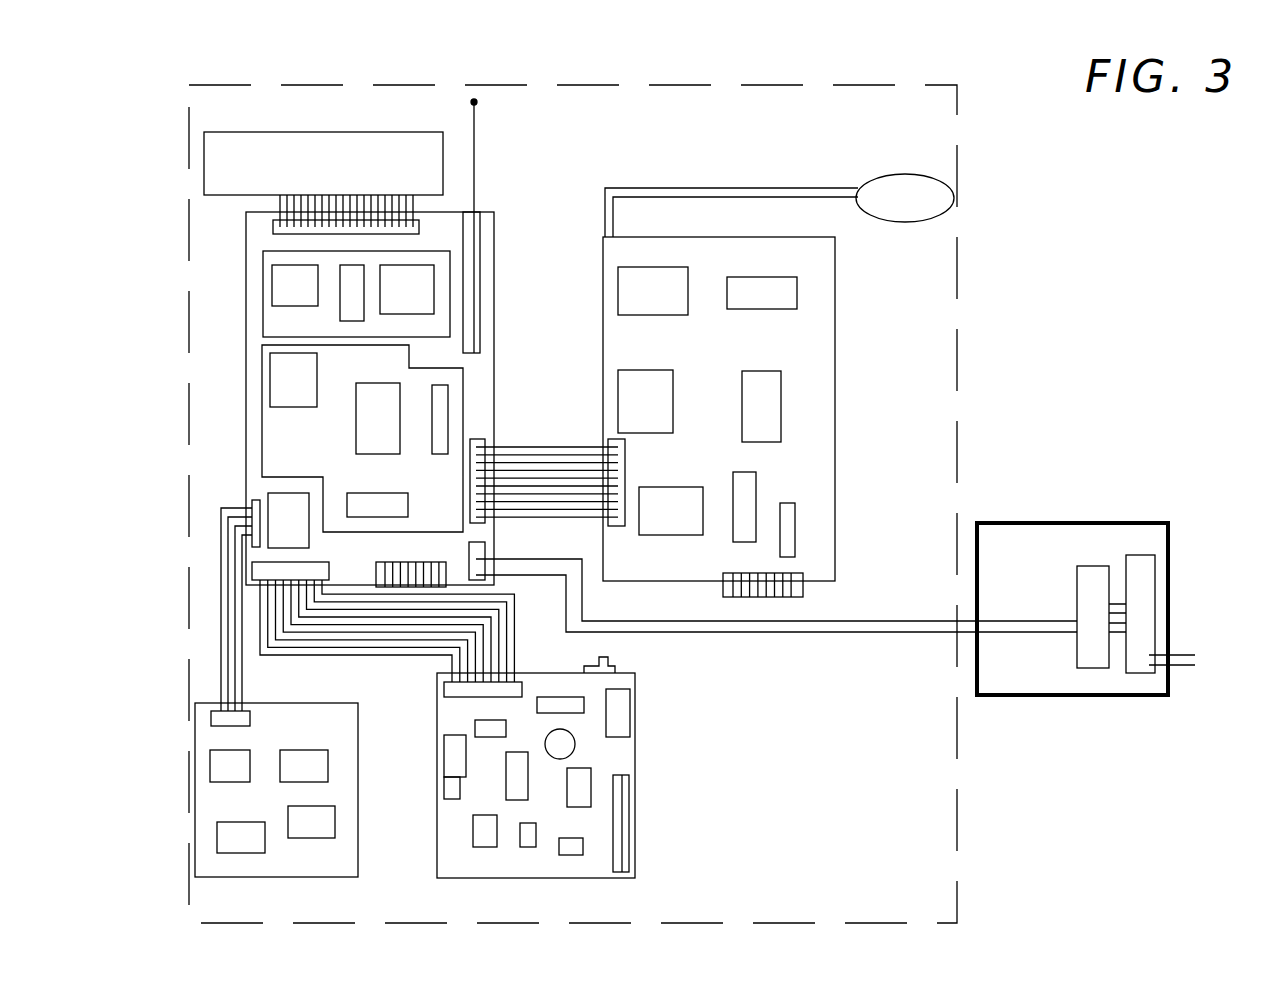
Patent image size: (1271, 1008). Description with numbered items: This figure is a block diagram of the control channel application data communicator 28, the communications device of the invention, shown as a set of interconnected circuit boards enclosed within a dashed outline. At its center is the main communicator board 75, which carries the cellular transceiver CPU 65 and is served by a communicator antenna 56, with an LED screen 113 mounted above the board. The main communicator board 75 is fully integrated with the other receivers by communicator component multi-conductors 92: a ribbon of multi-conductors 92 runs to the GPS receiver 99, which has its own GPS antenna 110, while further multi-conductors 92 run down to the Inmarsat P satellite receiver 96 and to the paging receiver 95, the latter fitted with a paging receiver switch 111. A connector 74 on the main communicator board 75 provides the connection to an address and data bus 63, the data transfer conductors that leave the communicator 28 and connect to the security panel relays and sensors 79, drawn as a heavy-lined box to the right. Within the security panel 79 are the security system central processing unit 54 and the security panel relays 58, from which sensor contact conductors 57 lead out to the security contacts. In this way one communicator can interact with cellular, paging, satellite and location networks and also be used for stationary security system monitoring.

The control channel application data communicator 28 is at (584, 72).
The LED screen 113 is at (374, 132).
The communicator antenna 56 is at (476, 134).
The main communicator board 75 is at (247, 336).
The cellular transceiver CPU 65 is at (392, 423).
The communicator component multi-conductors 92 is at (539, 463).
The connector 74 is at (481, 581).
The address and data bus 63 is at (717, 627).
The GPS receiver 99 is at (603, 357).
The GPS antenna 110 is at (776, 188).
The paging receiver switch 111 is at (612, 666).
The paging receiver 95 is at (437, 866).
The Inmarsat P satellite receiver 96 is at (333, 877).
The security panel relays and sensors 79 is at (1090, 695).
The security system central processing unit 54 is at (1090, 590).
The security panel relays 58 is at (1155, 578).
The sensor contact conductors 57 is at (1173, 668).